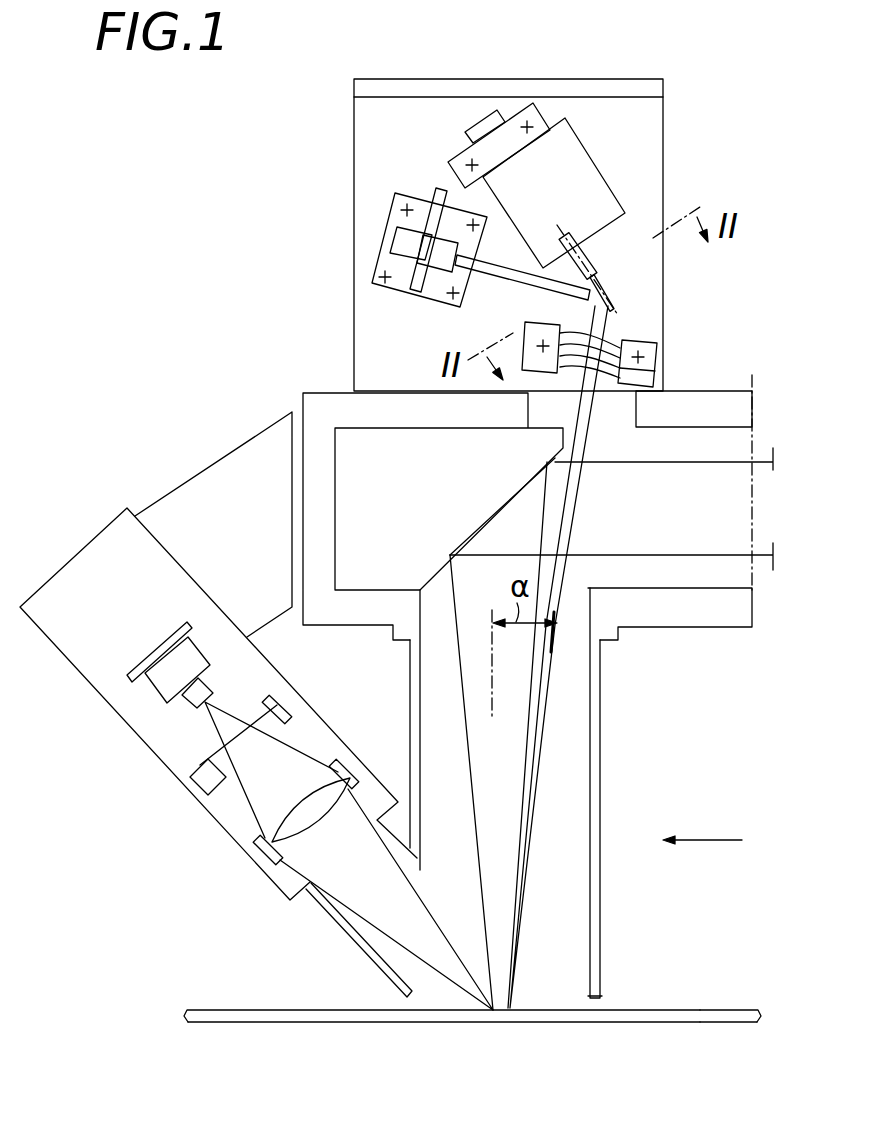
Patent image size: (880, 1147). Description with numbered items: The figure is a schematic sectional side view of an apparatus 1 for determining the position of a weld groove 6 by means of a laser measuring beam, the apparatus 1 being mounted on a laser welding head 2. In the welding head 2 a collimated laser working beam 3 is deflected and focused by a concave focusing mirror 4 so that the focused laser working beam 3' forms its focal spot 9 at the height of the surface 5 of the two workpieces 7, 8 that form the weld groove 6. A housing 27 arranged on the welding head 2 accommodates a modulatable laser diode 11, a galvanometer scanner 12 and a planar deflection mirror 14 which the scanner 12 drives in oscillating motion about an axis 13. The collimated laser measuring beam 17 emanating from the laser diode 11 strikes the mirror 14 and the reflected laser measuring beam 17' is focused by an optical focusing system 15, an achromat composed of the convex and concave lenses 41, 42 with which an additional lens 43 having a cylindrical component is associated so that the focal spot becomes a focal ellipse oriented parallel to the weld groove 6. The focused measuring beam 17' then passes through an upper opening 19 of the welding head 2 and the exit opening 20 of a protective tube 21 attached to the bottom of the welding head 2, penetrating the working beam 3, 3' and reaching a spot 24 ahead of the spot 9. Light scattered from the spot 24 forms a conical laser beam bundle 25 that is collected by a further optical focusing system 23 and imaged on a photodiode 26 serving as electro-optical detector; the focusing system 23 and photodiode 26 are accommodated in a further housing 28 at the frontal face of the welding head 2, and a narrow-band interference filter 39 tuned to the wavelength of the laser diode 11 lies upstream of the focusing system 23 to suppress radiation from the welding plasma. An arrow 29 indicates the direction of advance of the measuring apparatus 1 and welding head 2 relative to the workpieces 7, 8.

The apparatus for determining the position of a weld groove 1 is at (683, 58).
The laser welding head 2 is at (323, 391).
The collimated laser working beam 3 is at (678, 479).
The focused laser working beam 3' is at (409, 730).
The concave focusing mirror 4 is at (428, 587).
The surface of workpieces 5 is at (210, 1008).
The weld groove 6 is at (255, 1020).
The workpiece 7 is at (765, 962).
The workpiece 8 is at (740, 995).
The focal point or spot of the focused laser working beam 9 is at (519, 994).
The modulatable laser diode 11 is at (440, 256).
The galvanometer scanner 12 is at (577, 155).
The axis 13 is at (560, 233).
The planar deflection mirror 14 is at (598, 285).
The optical focusing system 15 is at (631, 325).
The collimated laser measuring beam 17 is at (522, 294).
The reflected laser measuring beam 17' is at (611, 656).
The upper opening of laser welding head 19 is at (628, 415).
The exit opening of protective tube 20 is at (573, 992).
The protective tube 21 is at (603, 894).
The further optical focusing system 23 is at (283, 820).
The spot of the focused laser measuring beam 24 is at (486, 990).
The conical laser beam bundle 25 is at (368, 925).
The photodiode 26 is at (195, 702).
The housing 27 is at (672, 157).
The further housing 28 is at (80, 672).
The arrow 29 is at (722, 839).
The narrow-band interference filter 39 is at (192, 785).
The lens 41 is at (656, 372).
The lens 42 is at (573, 340).
The additional lens having a cylindrical component 43 is at (577, 375).